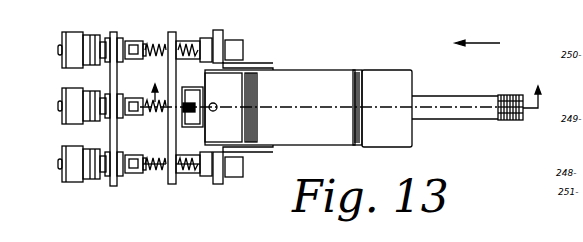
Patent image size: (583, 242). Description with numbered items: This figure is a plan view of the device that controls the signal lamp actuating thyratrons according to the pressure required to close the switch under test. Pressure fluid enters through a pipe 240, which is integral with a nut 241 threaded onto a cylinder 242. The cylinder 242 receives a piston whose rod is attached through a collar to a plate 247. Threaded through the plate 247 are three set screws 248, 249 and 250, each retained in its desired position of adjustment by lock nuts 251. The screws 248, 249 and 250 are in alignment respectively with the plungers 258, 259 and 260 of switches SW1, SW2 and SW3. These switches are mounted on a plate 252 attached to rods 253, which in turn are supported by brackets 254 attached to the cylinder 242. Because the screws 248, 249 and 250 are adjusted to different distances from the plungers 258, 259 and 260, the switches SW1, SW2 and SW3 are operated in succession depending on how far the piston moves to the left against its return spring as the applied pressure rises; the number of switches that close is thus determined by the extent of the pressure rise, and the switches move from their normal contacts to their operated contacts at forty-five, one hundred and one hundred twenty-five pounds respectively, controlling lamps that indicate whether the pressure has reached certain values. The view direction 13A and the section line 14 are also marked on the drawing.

The pipe 240 is at (478, 95).
The nut 241 is at (406, 69).
The cylinder 242 is at (332, 70).
The plate 247 is at (168, 141).
The set screw 248 is at (198, 176).
The set screw 249 is at (203, 105).
The set screw 250 is at (198, 60).
The lock nut 251 is at (179, 41).
The plate 252 is at (110, 184).
The rod 253 is at (157, 176).
The bracket 254 is at (253, 67).
The plunger 258 is at (143, 176).
The plunger 259 is at (152, 114).
The plunger 260 is at (133, 59).
The section line 14 is at (348, 86).
The view direction 13A is at (492, 45).
The switch SW1 is at (62, 152).
The switch SW2 is at (62, 94).
The switch SW3 is at (62, 38).